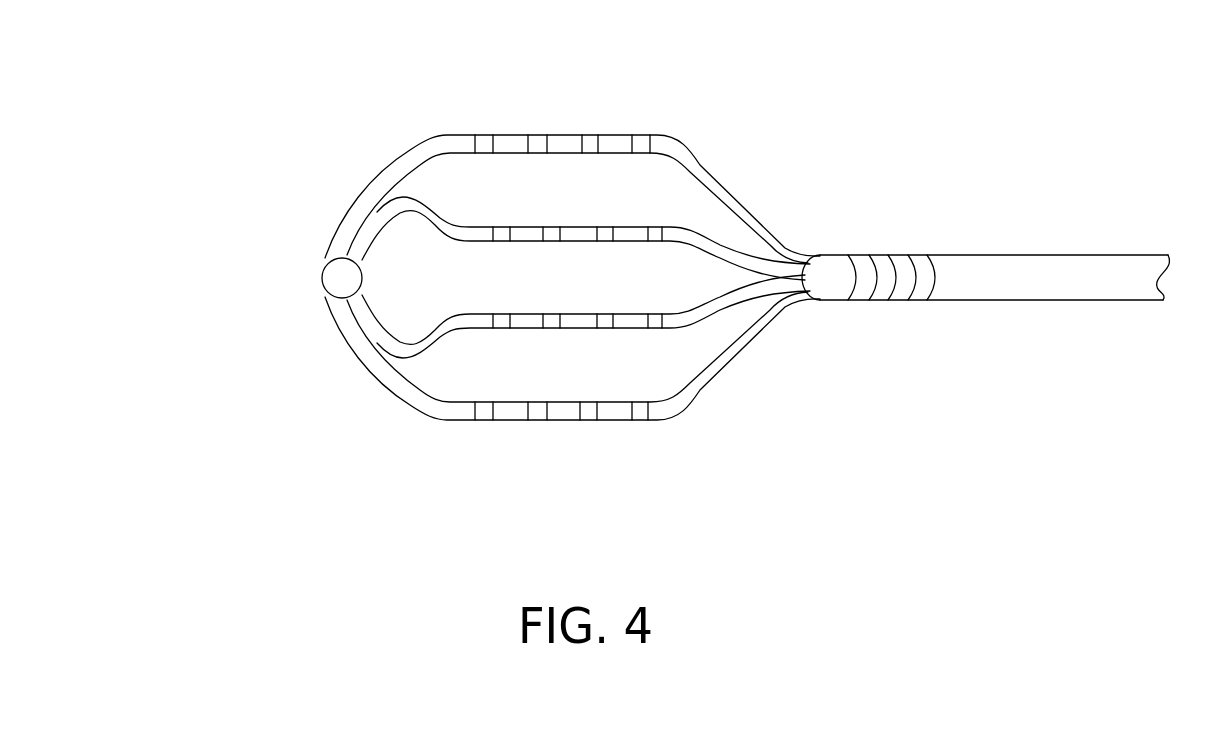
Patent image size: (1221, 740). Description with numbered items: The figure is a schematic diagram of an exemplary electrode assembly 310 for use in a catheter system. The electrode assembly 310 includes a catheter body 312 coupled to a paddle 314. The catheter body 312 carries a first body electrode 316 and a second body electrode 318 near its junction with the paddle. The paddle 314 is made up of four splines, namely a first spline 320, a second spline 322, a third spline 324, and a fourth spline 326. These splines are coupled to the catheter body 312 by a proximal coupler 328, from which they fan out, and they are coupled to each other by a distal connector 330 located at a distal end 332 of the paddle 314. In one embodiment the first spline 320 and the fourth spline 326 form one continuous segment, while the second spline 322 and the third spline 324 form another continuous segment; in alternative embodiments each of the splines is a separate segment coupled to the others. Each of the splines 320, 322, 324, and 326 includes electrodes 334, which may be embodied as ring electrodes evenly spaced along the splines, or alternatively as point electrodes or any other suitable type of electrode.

The electrode assembly 310 is at (1086, 196).
The catheter body 312 is at (1110, 285).
The paddle 314 is at (402, 128).
The first body electrode 316 is at (923, 258).
The second body electrode 318 is at (878, 263).
The first spline 320 is at (672, 147).
The second spline 322 is at (382, 233).
The third spline 324 is at (410, 347).
The fourth spline 326 is at (445, 412).
The proximal coupler 328 is at (835, 263).
The distal connector 330 is at (332, 282).
The distal end 332 is at (259, 236).
The electrodes 334 is at (537, 415).